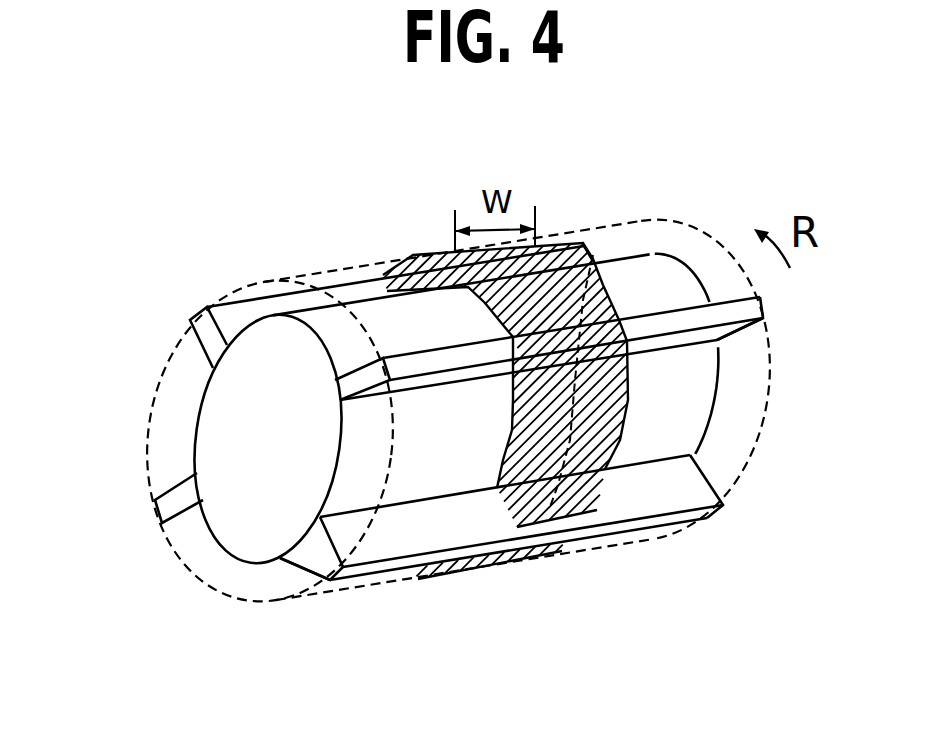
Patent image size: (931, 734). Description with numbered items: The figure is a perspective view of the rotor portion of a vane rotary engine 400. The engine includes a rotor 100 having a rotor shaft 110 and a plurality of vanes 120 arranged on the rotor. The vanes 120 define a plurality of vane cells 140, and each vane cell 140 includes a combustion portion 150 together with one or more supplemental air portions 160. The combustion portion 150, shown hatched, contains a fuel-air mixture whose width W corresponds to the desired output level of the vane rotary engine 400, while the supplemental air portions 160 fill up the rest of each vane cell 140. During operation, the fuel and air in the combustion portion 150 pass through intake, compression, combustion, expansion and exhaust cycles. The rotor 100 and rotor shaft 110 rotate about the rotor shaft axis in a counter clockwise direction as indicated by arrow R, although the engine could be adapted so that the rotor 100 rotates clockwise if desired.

The vane rotary engine 400 is at (153, 151).
The rotor 100 is at (127, 420).
The rotor shaft 110 is at (228, 553).
The vanes 120 is at (193, 315).
The vane cells 140 is at (757, 435).
The combustion portion 150 is at (595, 517).
The supplemental air portions 160 is at (285, 580).